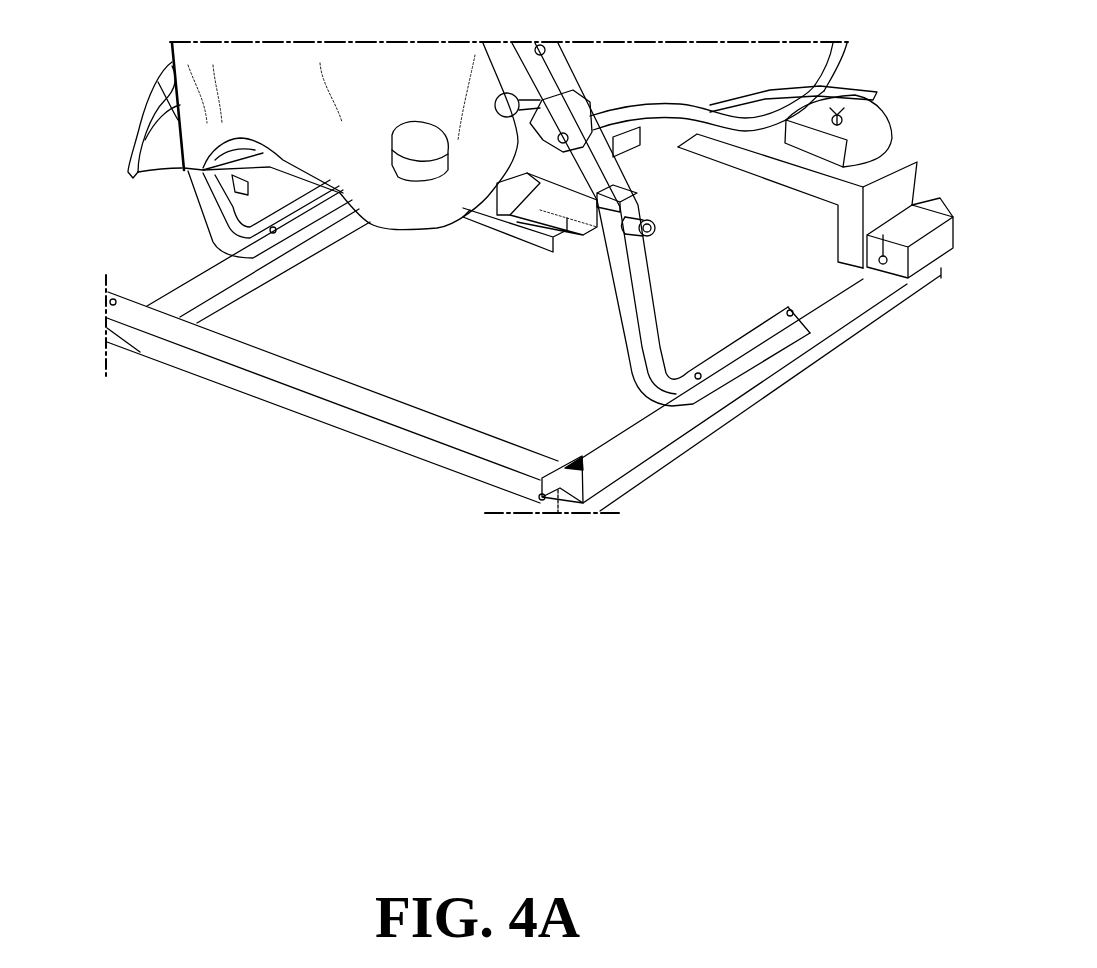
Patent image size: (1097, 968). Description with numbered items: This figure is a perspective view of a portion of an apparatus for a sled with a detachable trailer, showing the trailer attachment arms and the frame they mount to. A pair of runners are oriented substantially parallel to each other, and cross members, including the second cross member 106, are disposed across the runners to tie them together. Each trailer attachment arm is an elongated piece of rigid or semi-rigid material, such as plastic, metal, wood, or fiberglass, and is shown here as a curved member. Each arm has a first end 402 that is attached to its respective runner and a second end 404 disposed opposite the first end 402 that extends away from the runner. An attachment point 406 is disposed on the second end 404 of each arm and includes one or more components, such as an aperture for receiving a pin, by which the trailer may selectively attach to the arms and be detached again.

The second cross member 106 is at (292, 402).
The first end 402 is at (843, 371).
The second end 404 is at (572, 311).
The attachment point 406 is at (614, 224).